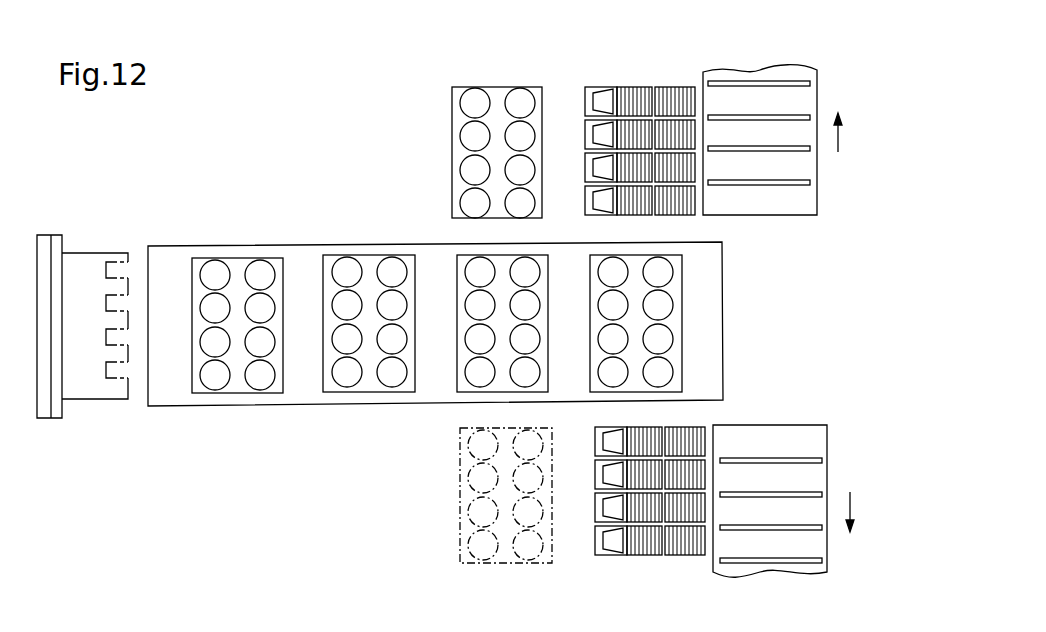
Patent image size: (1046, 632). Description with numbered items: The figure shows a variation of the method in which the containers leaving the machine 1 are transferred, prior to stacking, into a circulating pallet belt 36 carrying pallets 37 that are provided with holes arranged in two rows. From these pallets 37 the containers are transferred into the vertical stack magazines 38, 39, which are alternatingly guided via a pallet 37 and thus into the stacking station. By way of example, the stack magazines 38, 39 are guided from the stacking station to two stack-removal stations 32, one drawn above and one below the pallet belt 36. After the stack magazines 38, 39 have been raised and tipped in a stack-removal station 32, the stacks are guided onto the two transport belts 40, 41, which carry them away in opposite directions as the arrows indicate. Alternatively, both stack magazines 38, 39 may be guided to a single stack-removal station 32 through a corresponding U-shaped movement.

The sample carrier / feed unit 1 is at (80, 270).
The stack-removal station 32 is at (632, 82).
The circulating pallet belt 36 is at (173, 260).
The pallet 37 is at (273, 288).
The stack magazine 38 is at (461, 281).
The stack magazine 39 is at (460, 121).
The transport belt 40 is at (763, 198).
The transport belt 41 is at (768, 440).